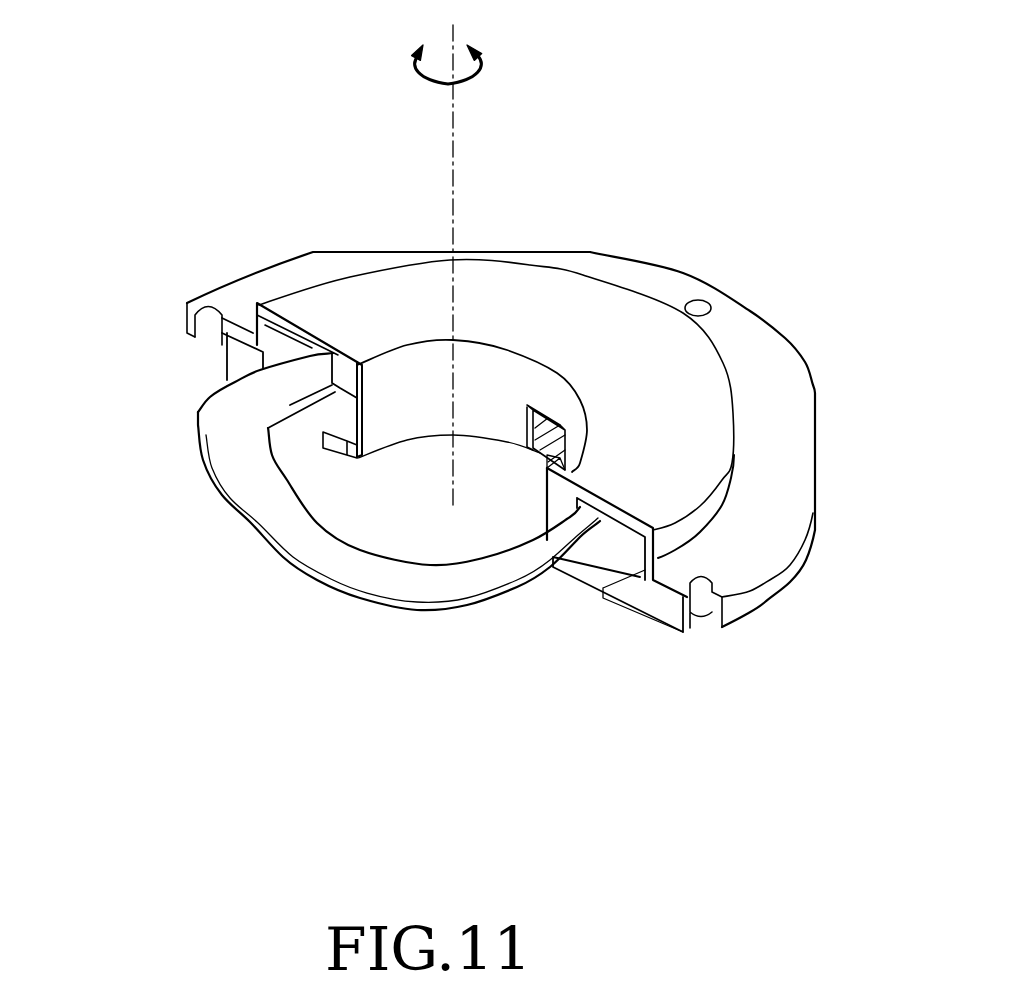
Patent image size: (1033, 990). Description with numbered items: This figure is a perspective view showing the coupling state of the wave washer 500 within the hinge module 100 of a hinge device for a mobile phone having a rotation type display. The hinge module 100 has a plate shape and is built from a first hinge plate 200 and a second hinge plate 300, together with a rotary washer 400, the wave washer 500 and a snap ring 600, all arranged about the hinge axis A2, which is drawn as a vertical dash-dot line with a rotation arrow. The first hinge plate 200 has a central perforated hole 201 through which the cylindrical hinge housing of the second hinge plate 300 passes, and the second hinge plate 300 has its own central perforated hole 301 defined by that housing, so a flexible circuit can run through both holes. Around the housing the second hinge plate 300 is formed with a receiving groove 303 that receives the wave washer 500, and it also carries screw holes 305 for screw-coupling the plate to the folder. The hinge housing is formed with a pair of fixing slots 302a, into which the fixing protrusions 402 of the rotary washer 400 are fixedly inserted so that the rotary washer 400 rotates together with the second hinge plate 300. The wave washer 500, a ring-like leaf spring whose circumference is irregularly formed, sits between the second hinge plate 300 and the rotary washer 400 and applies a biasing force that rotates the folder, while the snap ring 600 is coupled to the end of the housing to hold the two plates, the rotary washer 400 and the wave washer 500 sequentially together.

The hinge module 100 is at (232, 78).
The first hinge plate 200 is at (212, 367).
The perforated hole 201 is at (357, 390).
The second hinge plate 300 is at (636, 246).
The perforated hole 301 is at (468, 370).
The fixing slot 302a is at (580, 488).
The receiving groove 303 is at (258, 305).
The screw hole 305 is at (205, 320).
The rotary washer 400 is at (602, 580).
The fixing protrusion 402 is at (545, 410).
The wave washer 500 is at (303, 583).
The snap ring 600 is at (315, 455).
The hinge axis A2 is at (453, 113).